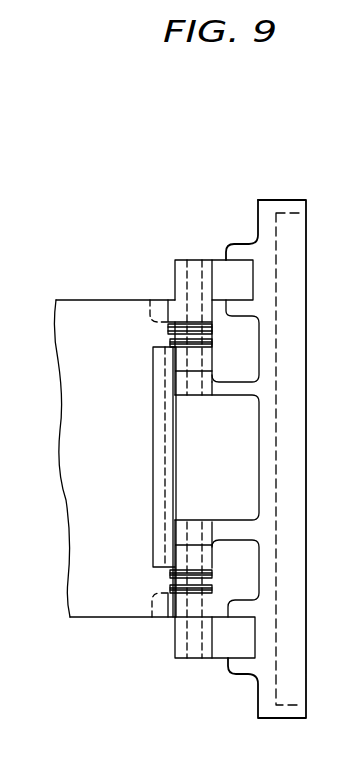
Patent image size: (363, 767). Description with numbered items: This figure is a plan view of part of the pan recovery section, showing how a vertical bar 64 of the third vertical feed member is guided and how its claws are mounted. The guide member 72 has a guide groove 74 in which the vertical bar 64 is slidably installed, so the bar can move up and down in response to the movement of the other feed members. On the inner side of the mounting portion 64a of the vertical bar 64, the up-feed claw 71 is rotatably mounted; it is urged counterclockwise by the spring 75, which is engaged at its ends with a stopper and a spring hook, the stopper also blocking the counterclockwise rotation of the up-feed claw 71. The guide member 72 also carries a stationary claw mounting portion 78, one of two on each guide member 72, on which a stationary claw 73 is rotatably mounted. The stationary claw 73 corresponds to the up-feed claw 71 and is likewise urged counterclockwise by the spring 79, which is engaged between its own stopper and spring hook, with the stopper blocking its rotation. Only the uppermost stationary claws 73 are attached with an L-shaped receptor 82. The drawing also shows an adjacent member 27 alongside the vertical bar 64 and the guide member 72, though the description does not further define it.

The plate 27 is at (103, 605).
The vertical bar 64 is at (223, 270).
The mounting portion 64a is at (178, 277).
The up-feed claw 71 is at (213, 328).
The guide member 72 is at (288, 465).
The stationary claw 73 is at (207, 558).
The guide groove 74 is at (255, 282).
The spring 75 is at (208, 315).
The stationary claw mounting portion 78 is at (218, 393).
The spring 79 is at (212, 572).
The L-shaped receptor 82 is at (157, 468).